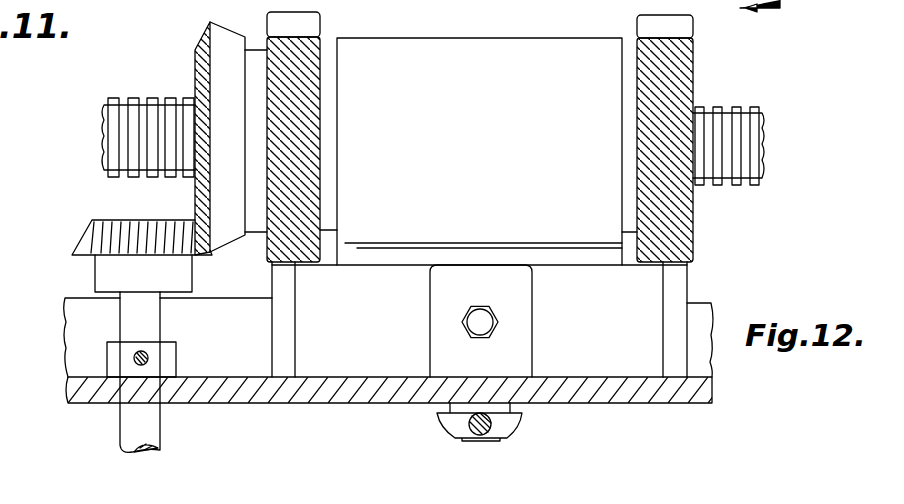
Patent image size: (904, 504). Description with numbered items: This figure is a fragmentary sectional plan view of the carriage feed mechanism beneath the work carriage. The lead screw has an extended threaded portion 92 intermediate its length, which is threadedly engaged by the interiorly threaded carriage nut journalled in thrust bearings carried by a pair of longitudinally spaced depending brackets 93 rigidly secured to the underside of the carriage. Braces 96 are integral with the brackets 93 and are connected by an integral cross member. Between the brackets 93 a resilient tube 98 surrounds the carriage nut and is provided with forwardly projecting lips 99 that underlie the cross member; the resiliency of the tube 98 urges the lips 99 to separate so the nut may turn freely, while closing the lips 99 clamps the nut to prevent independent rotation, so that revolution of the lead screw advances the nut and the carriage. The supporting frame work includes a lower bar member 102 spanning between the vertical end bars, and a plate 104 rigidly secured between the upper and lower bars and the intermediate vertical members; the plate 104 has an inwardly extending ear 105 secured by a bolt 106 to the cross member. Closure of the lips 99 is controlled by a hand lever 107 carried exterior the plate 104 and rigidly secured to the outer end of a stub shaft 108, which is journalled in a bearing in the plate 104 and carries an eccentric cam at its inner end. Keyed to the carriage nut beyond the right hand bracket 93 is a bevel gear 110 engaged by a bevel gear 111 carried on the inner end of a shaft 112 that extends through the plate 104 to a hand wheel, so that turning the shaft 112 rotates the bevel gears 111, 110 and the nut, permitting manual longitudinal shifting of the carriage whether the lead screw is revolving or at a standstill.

The threaded portion 92 is at (130, 108).
The depending brackets 93 is at (302, 26).
The braces 96 is at (285, 311).
The tube 98 is at (400, 45).
The lips 99 is at (412, 258).
The lower bar member 102 is at (72, 320).
The plate 104 is at (197, 378).
The inwardly extending ear 105 is at (510, 278).
The bolt 106 is at (486, 320).
The hand lever 107 is at (505, 426).
The stub shaft 108 is at (480, 440).
The bevel gear 110 is at (206, 34).
The bevel gear 111 is at (166, 222).
The shaft 112 is at (145, 318).